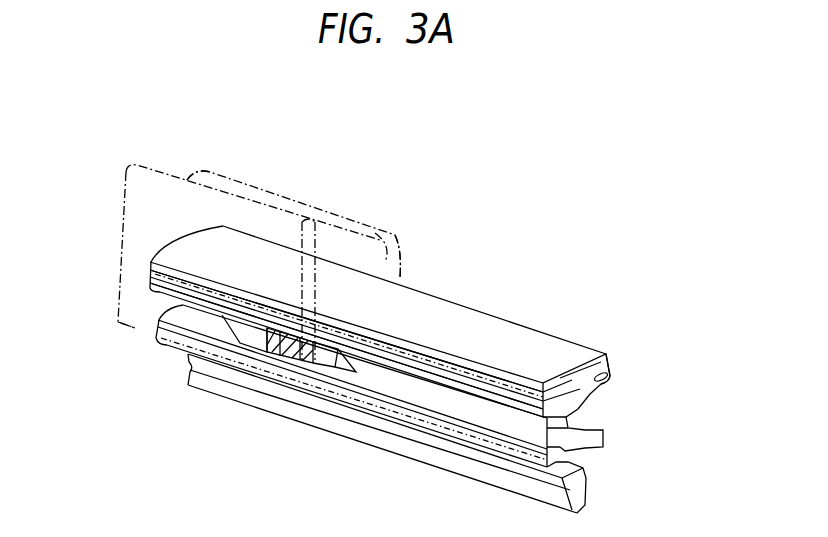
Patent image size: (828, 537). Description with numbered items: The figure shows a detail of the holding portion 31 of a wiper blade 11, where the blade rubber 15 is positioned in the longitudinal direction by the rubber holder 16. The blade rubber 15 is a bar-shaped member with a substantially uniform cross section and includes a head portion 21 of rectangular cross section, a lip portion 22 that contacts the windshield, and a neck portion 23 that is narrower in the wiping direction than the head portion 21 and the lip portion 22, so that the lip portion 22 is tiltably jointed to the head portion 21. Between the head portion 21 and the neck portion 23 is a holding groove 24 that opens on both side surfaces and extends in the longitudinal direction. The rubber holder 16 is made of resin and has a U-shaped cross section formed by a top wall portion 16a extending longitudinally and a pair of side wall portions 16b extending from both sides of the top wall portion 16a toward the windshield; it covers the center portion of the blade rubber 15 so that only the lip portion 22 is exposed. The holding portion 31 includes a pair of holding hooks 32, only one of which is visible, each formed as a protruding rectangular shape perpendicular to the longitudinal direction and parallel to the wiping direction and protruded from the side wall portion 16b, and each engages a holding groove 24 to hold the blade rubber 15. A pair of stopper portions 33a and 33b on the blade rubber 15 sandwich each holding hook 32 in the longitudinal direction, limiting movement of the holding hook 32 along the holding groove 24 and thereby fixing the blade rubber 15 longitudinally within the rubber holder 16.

The wiper blade 11 is at (537, 185).
The blade rubber 15 is at (522, 327).
The rubber holder 16 is at (327, 203).
The top wall portion 16a is at (236, 188).
The side wall portions 16b is at (395, 237).
The head portion 21 is at (611, 350).
The lip portion 22 is at (592, 482).
The neck portion 23 is at (583, 440).
The holding groove 24 is at (600, 408).
The holding portion 31 is at (258, 382).
The holding hooks 32 is at (273, 357).
The stopper portion 33a is at (342, 362).
The stopper portion 33b is at (255, 333).